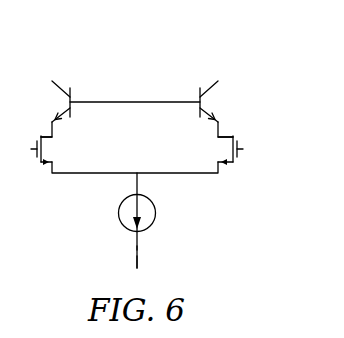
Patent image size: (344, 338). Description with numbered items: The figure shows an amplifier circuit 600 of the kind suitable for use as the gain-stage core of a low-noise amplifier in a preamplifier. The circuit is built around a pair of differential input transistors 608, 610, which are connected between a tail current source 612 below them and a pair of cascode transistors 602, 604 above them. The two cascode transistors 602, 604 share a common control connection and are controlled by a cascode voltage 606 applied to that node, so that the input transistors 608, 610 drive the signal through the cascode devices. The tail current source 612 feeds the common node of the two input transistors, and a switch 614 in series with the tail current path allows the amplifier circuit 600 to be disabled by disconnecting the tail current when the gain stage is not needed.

The amplifier circuit 600 is at (181, 38).
The cascode transistor 602 is at (72, 93).
The cascode transistor 604 is at (199, 96).
The cascode voltage 606 is at (167, 102).
The differential input transistor 608 is at (45, 139).
The differential input transistor 610 is at (228, 139).
The tail current source 612 is at (122, 226).
The switch 614 is at (141, 252).